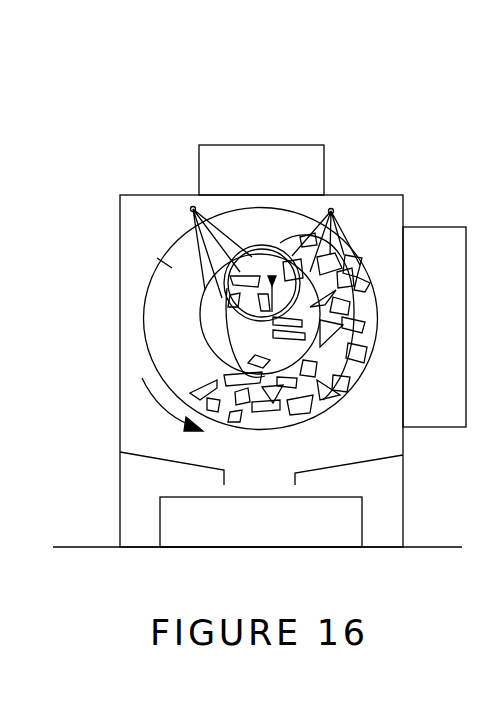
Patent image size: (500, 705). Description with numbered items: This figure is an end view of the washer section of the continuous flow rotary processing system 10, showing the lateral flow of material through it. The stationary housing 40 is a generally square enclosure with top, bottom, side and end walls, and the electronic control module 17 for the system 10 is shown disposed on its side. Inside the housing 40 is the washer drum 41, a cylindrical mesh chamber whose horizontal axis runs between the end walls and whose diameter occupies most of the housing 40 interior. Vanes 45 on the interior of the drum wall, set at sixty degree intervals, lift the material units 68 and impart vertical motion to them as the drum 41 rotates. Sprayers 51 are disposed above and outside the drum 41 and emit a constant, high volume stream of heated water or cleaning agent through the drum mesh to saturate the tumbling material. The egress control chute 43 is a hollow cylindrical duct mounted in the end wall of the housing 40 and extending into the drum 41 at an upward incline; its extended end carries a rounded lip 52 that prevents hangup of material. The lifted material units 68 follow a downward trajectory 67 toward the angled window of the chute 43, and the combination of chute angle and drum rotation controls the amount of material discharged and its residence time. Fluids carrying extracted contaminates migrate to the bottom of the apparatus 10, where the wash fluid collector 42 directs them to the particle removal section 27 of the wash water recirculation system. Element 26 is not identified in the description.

The system 10 is at (186, 96).
The inlet hopper 26 is at (285, 150).
The electronic control module 17 is at (439, 220).
The particle removal section 27 is at (166, 560).
The housing 40 is at (104, 378).
The washer drum 41 is at (163, 250).
The wash fluid collector 42 is at (366, 461).
The egress control chute 43 is at (237, 328).
The vanes 45 is at (150, 414).
The sprayers 51 is at (190, 209).
The rounded lip 52 is at (250, 250).
The expected path of material 67 is at (279, 236).
The material units 68 is at (364, 286).